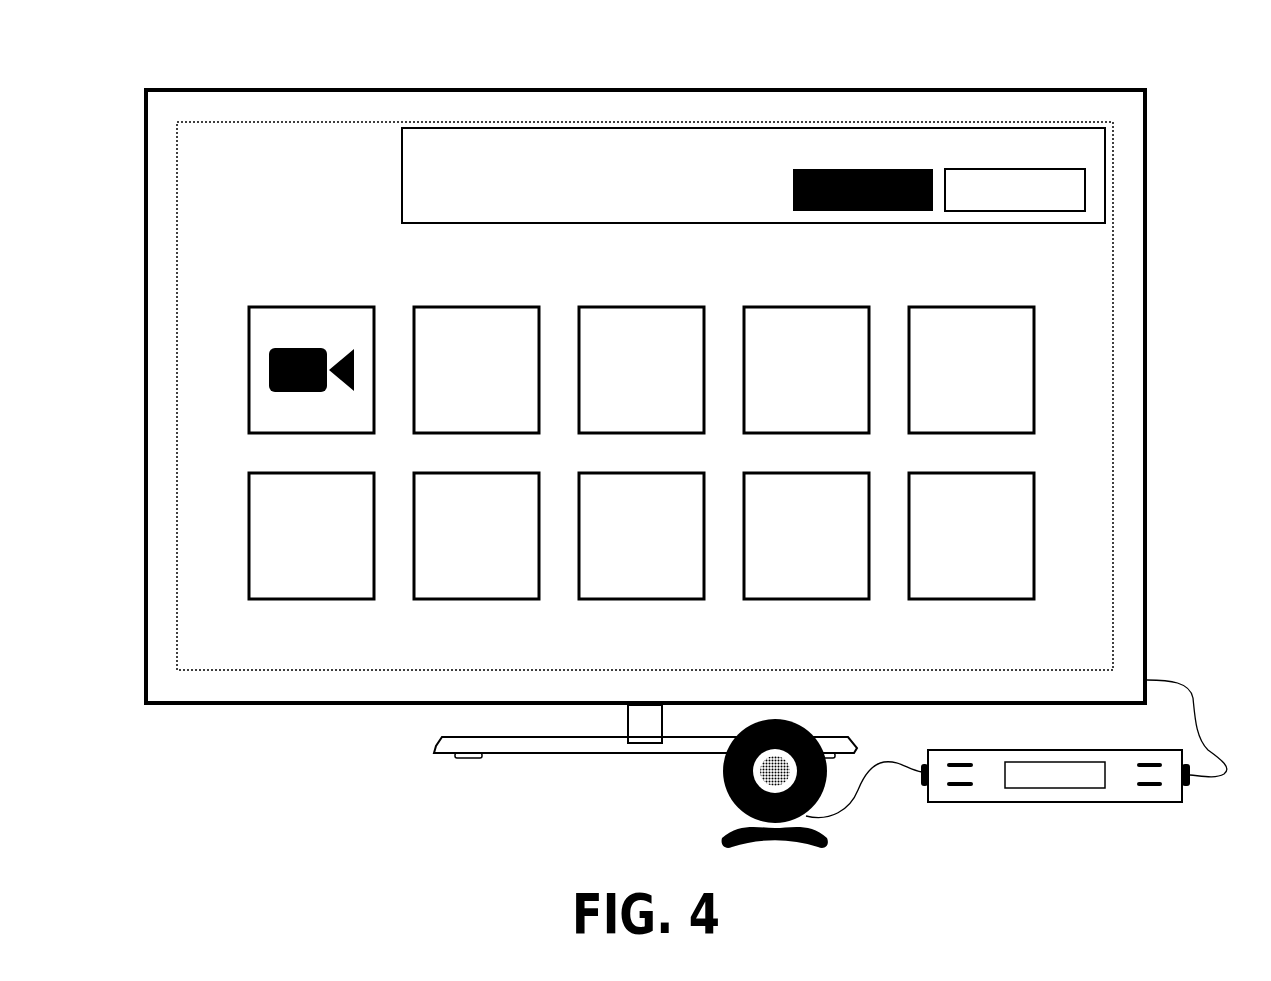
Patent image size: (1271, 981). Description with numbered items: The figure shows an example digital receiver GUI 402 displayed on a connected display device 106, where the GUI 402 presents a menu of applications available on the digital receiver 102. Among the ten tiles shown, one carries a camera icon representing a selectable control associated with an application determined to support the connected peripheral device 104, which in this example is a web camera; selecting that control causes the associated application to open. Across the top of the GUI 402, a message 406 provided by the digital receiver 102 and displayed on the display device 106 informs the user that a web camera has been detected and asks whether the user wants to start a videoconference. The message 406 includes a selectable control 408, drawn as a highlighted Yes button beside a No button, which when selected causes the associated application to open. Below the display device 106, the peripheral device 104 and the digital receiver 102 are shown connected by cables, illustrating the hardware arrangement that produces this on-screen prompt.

The display device 106 is at (207, 97).
The digital receiver GUI 402 is at (313, 143).
The message 406 is at (1043, 133).
The selectable control 408 is at (830, 213).
The peripheral device 104 is at (732, 800).
The digital receiver 102 is at (1175, 802).